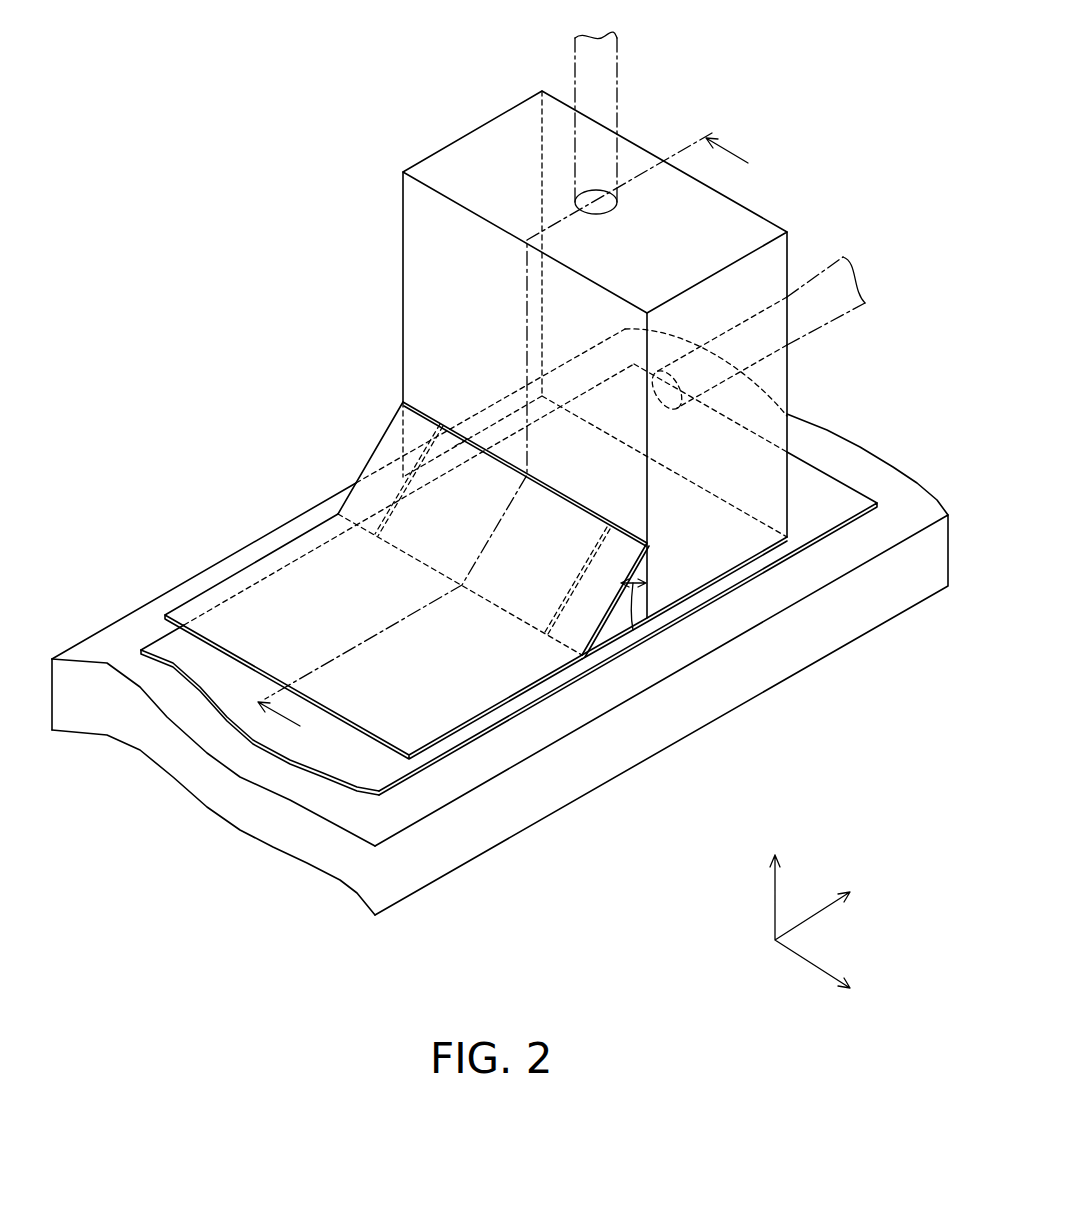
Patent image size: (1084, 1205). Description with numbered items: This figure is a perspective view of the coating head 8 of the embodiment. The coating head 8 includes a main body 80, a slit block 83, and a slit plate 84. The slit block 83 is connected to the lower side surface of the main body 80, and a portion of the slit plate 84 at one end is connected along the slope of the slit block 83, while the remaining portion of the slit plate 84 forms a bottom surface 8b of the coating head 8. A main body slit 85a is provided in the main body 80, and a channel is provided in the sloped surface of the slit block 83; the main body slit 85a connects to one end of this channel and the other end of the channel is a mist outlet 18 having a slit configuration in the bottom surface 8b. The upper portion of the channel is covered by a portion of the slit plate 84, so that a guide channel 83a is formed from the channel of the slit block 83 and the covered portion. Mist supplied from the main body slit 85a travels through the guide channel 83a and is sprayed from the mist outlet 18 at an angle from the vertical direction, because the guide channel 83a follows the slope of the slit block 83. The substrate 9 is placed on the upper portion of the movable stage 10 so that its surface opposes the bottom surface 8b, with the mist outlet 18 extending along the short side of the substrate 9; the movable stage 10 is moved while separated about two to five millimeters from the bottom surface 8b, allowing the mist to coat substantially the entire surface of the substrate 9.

The coating head 8 is at (804, 109).
The main body 80 is at (425, 238).
The main body slit 85a is at (463, 440).
The guide channel 83a is at (405, 478).
The mist outlet 18 is at (380, 508).
The movable stage 10 is at (845, 623).
The substrate 9 is at (380, 767).
The slit plate 84 is at (472, 685).
The bottom surface 8b is at (562, 672).
The slit block 83 is at (612, 628).